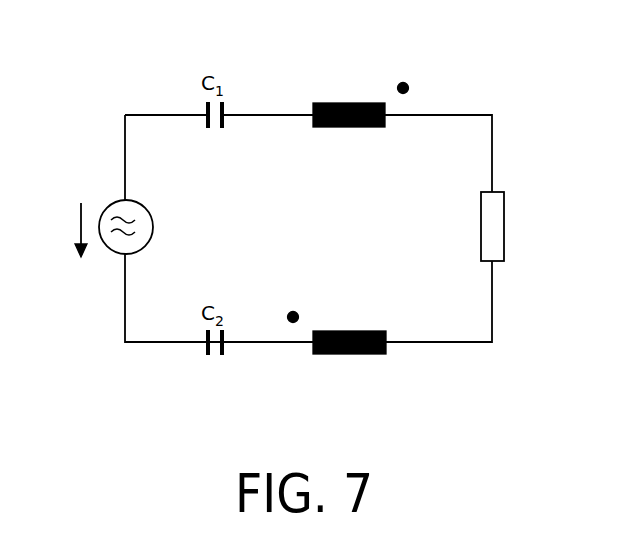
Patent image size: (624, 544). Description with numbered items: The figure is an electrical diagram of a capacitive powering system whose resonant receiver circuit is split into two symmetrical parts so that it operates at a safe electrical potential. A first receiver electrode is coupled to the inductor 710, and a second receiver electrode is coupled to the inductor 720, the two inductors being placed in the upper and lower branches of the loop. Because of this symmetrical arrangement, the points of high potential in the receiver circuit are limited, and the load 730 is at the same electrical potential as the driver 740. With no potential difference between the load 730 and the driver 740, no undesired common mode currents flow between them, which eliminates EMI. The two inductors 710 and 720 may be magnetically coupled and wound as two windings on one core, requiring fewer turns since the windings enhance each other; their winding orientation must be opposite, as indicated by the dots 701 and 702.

The dot 701 is at (403, 82).
The dot 702 is at (293, 311).
The inductor 710 is at (343, 127).
The inductor 720 is at (344, 354).
The load 730 is at (504, 228).
The driver 740 is at (153, 228).